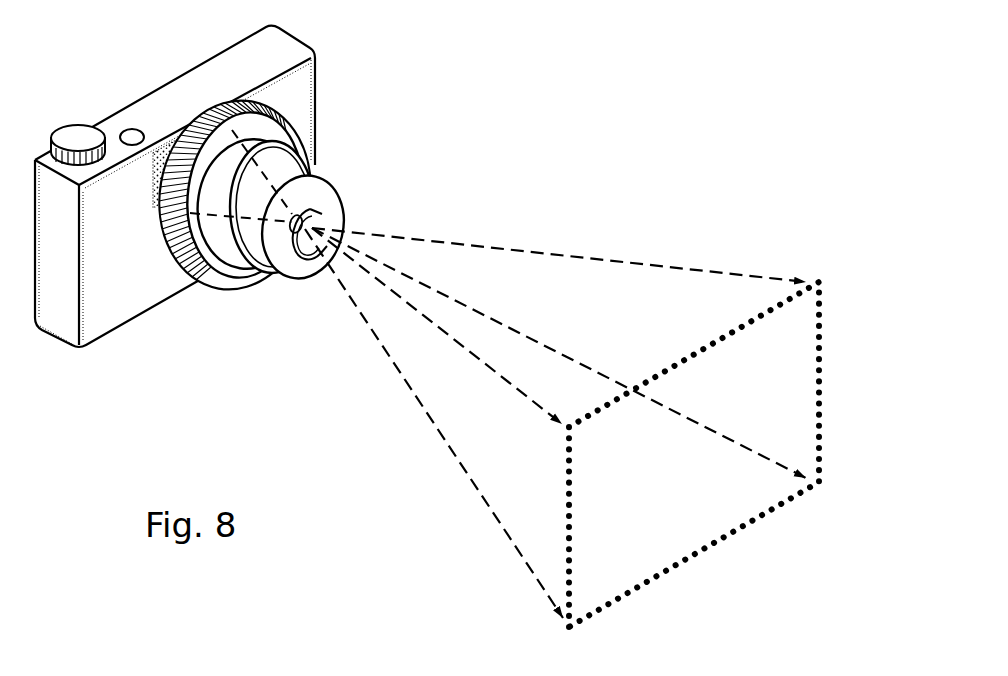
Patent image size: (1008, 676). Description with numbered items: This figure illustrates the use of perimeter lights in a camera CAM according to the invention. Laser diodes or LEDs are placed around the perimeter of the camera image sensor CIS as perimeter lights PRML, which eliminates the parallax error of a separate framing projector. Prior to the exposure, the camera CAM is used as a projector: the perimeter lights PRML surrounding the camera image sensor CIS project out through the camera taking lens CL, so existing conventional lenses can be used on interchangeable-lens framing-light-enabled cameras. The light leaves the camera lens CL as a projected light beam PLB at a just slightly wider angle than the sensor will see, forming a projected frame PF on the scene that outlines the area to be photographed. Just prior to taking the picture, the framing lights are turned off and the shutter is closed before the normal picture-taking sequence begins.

The camera CAM is at (331, 52).
The perimeter lights PRML is at (205, 122).
The camera-image sensor CIS is at (153, 181).
The camera lens CL is at (322, 212).
The projected light beam PLB is at (385, 287).
The projected frame PF is at (733, 535).